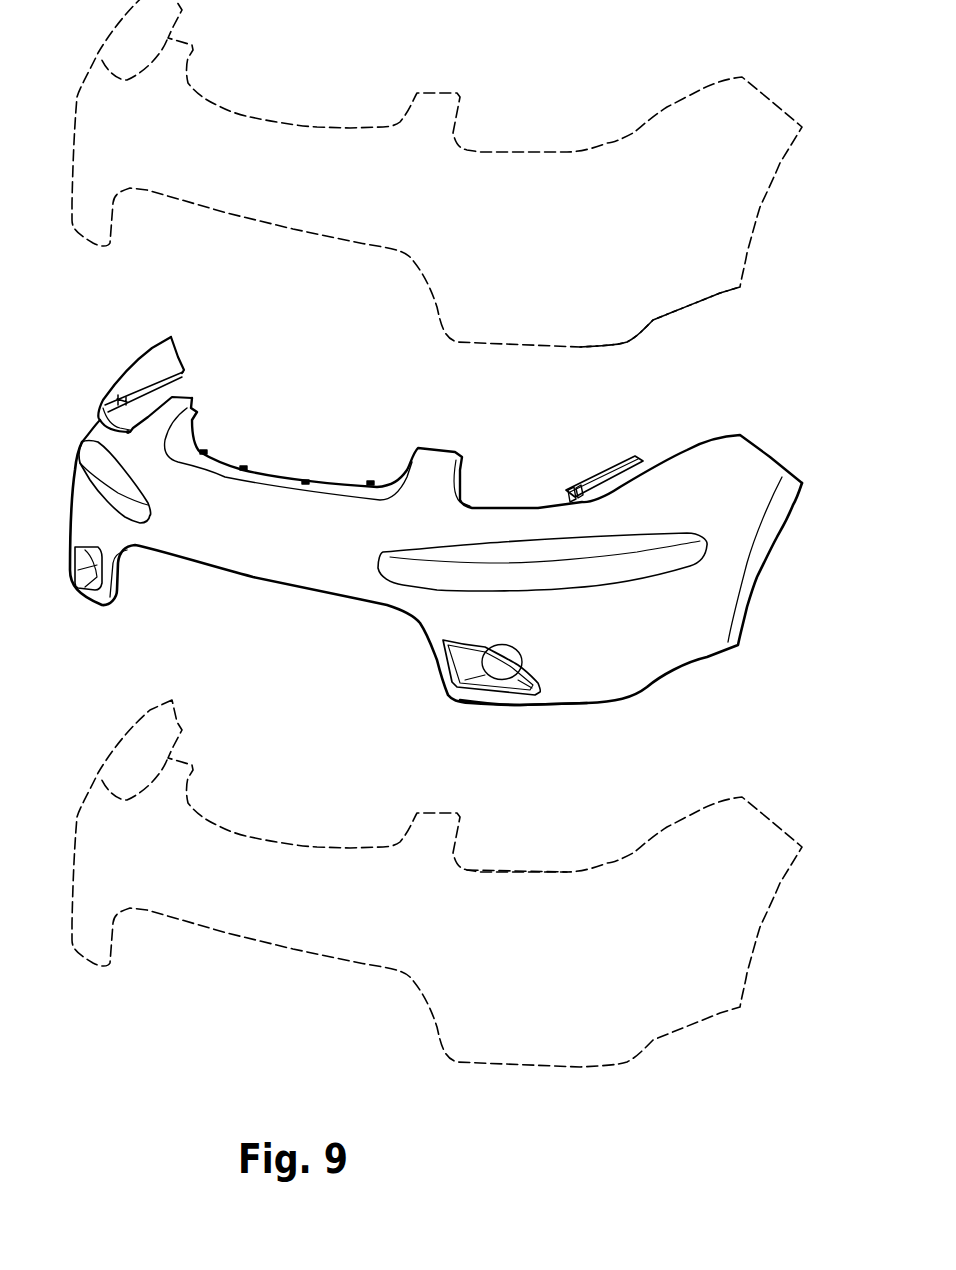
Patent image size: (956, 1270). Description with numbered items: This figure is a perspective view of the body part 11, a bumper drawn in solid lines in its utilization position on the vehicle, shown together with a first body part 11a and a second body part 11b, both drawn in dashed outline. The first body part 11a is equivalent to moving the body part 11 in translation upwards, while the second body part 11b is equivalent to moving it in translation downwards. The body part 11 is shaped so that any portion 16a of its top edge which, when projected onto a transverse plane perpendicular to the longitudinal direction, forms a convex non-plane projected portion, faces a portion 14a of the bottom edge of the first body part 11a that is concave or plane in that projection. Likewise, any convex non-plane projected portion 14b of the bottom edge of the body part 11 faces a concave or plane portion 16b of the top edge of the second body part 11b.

The body part 11 is at (740, 482).
The first body part 11a is at (677, 147).
The second body part 11b is at (745, 852).
The portion of the bottom edge 14a is at (688, 307).
The portion of the bottom edge 14b is at (498, 707).
The portion of the top edge 16a is at (697, 447).
The portion of the top edge 16b is at (507, 873).